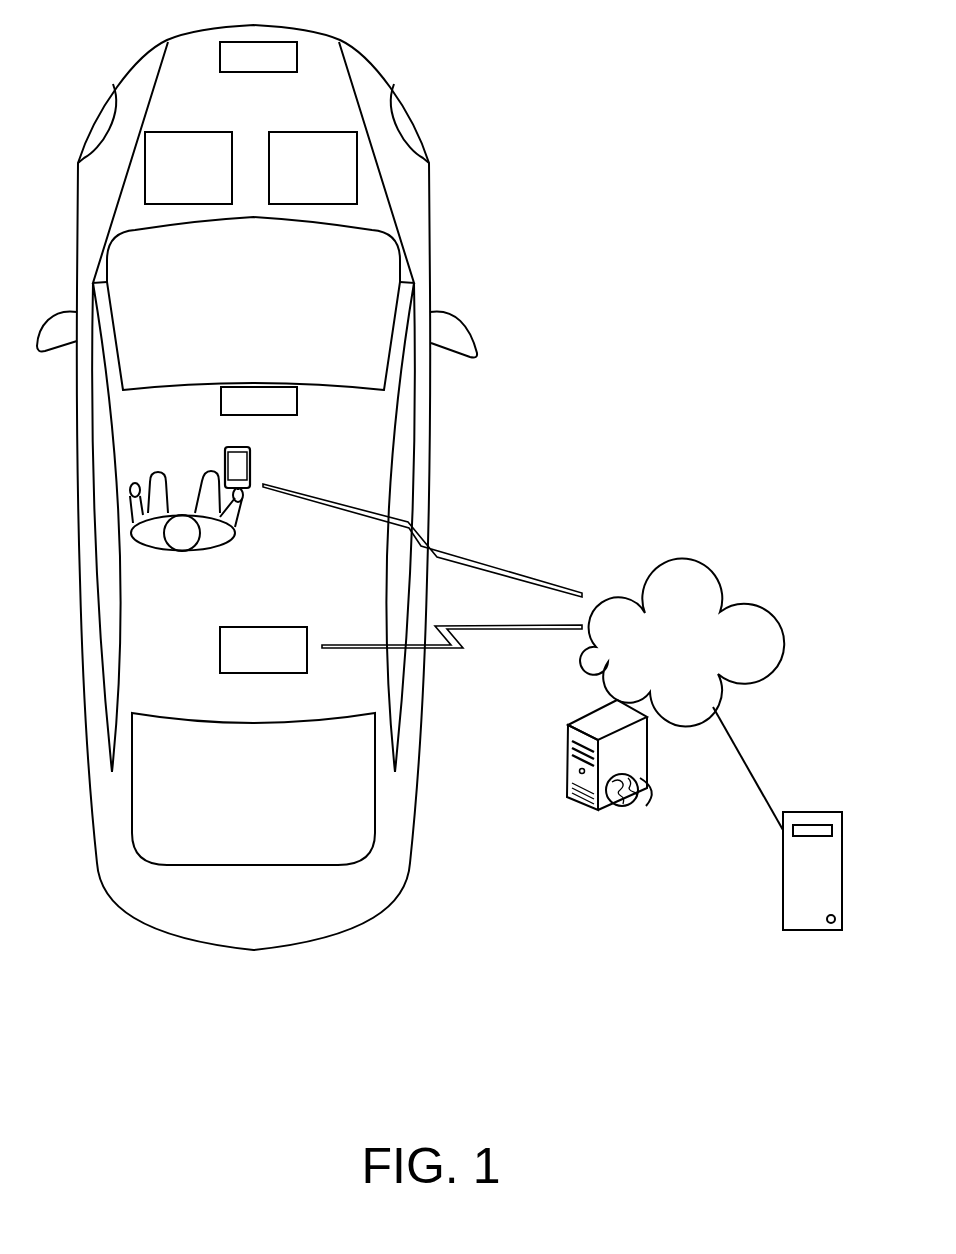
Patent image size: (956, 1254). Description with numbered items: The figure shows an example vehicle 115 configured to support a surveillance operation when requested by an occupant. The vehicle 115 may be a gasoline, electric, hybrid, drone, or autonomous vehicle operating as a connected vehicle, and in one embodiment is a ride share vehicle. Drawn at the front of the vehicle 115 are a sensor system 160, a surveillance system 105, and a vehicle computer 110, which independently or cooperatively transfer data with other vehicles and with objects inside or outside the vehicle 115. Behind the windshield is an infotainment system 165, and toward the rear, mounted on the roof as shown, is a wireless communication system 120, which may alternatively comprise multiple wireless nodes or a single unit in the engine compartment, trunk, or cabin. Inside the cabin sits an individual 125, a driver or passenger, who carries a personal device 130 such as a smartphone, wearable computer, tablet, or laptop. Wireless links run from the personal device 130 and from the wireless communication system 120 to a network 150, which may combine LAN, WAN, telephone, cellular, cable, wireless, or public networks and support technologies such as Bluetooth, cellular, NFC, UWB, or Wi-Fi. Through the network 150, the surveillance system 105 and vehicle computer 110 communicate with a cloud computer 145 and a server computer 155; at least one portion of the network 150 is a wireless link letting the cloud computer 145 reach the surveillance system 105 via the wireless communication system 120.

The surveillance system 105 is at (169, 178).
The vehicle computer 110 is at (294, 178).
The vehicle 115 is at (466, 143).
The wireless communication system 120 is at (244, 664).
The individual 125 is at (210, 552).
The personal device 130 is at (252, 468).
The cloud computer 145 is at (545, 808).
The network 150 is at (772, 658).
The server computer 155 is at (770, 884).
The sensor system 160 is at (240, 66).
The infotainment system 165 is at (240, 411).